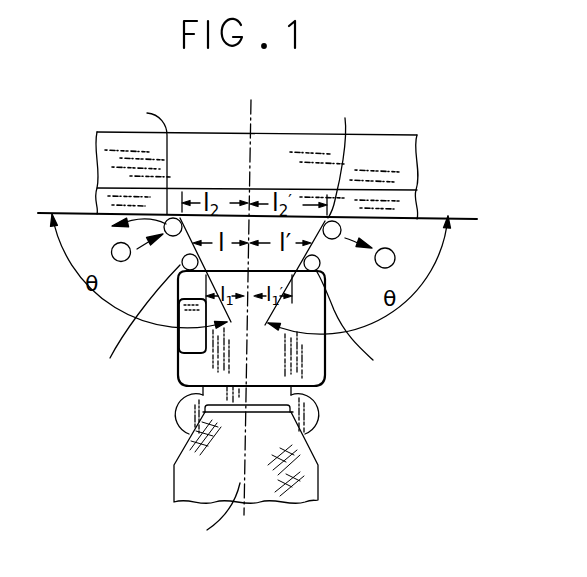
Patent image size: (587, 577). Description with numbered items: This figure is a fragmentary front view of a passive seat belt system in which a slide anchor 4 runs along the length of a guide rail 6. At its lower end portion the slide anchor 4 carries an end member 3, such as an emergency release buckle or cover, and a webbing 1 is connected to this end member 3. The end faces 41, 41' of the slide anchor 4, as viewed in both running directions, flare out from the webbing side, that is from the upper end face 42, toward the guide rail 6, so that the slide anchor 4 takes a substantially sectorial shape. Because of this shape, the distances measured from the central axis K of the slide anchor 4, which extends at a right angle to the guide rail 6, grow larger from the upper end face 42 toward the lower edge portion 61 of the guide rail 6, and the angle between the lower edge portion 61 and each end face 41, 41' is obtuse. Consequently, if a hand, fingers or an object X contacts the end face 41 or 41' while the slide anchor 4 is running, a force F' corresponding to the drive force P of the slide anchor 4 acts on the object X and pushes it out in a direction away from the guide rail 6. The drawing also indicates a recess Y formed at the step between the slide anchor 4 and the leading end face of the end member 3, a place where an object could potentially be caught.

The webbing 1 is at (306, 478).
The end member 3 is at (336, 374).
The slide anchor 4 is at (324, 238).
The guide rail 6 is at (377, 162).
The end face 41 is at (148, 259).
The end face 41' is at (343, 273).
The upper end face 42 is at (181, 275).
The lower edge portion 61 is at (436, 220).
The central axis K is at (212, 516).
The drive force P is at (133, 227).
The force F' is at (150, 252).
The object X is at (240, 156).
The recess Y is at (242, 327).